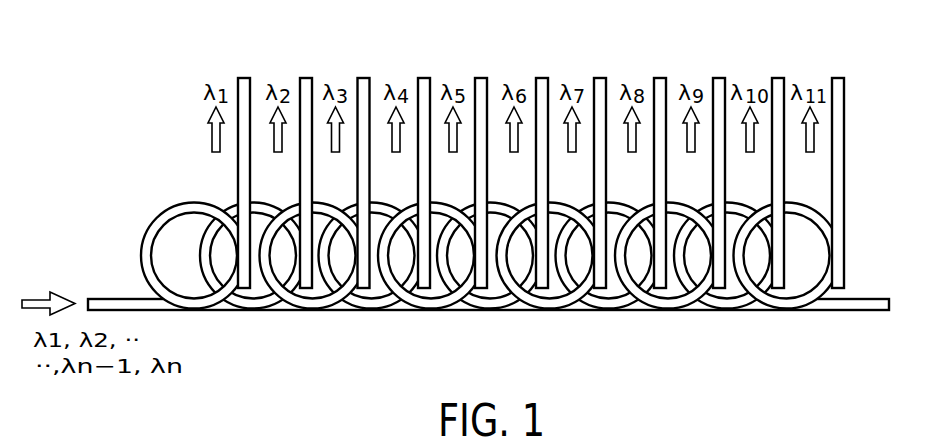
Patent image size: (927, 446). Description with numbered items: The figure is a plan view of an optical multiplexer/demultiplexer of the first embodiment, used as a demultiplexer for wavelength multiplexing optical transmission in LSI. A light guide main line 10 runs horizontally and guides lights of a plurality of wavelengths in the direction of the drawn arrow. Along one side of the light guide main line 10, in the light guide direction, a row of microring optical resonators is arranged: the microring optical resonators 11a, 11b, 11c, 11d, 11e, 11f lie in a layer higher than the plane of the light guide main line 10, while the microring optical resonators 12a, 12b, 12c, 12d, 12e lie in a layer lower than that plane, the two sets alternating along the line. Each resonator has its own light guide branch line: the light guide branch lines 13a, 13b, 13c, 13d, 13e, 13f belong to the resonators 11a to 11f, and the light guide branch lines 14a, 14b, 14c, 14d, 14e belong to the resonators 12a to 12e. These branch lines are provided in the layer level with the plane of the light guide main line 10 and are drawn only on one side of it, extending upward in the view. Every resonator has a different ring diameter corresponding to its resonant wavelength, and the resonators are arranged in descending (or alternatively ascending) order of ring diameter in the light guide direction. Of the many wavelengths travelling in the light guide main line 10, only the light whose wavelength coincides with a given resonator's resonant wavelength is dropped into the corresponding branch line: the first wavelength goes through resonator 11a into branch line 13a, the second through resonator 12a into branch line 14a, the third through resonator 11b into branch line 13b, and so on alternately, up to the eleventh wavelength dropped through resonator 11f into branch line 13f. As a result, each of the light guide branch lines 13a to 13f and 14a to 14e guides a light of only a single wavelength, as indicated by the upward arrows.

The light guide main line 10 is at (867, 298).
The microring optical resonator 11a is at (192, 311).
The microring optical resonator 11b is at (310, 311).
The microring optical resonator 11c is at (429, 311).
The microring optical resonator 11d is at (547, 311).
The microring optical resonator 11e is at (666, 311).
The microring optical resonator 11f is at (785, 311).
The microring optical resonator 12a is at (266, 205).
The microring optical resonator 12b is at (384, 205).
The microring optical resonator 12c is at (503, 205).
The microring optical resonator 12d is at (621, 205).
The microring optical resonator 12e is at (740, 205).
The light guide branch line 13a is at (244, 77).
The light guide branch line 13b is at (364, 77).
The light guide branch line 13c is at (481, 77).
The light guide branch line 13d is at (600, 77).
The light guide branch line 13e is at (719, 77).
The light guide branch line 13f is at (838, 77).
The light guide branch line 14a is at (306, 77).
The light guide branch line 14b is at (424, 77).
The light guide branch line 14c is at (542, 77).
The light guide branch line 14d is at (660, 77).
The light guide branch line 14e is at (778, 77).